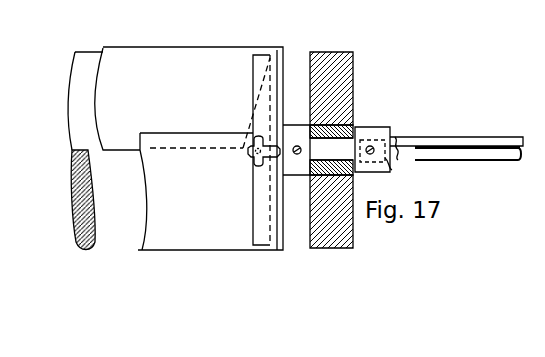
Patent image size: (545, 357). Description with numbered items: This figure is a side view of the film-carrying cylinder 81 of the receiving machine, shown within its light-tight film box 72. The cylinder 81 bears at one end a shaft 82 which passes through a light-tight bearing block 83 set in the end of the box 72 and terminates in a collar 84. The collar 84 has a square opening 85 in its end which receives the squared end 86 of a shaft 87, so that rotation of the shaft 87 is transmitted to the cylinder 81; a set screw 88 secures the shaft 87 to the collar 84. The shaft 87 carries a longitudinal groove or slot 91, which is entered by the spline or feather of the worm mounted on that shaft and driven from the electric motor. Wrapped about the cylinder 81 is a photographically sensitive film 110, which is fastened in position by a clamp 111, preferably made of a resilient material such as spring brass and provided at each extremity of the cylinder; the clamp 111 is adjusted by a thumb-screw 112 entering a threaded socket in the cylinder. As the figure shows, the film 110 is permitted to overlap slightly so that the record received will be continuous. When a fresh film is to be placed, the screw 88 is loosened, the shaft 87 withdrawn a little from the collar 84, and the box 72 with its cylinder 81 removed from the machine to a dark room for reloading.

The film box 72 is at (337, 53).
The film-carrying cylinder 81 is at (104, 149).
The shaft 82 is at (318, 150).
The light-tight bearing block 83 is at (318, 130).
The collar 84 is at (380, 130).
The square opening 85 is at (390, 165).
The squared end 86 is at (400, 142).
The shaft 87 is at (498, 137).
The set screw 88 is at (372, 155).
The longitudinal groove or slot 91 is at (500, 160).
The photographically sensitive film 110 is at (193, 148).
The clamp 111 is at (253, 98).
The thumb-screw 112 is at (255, 156).